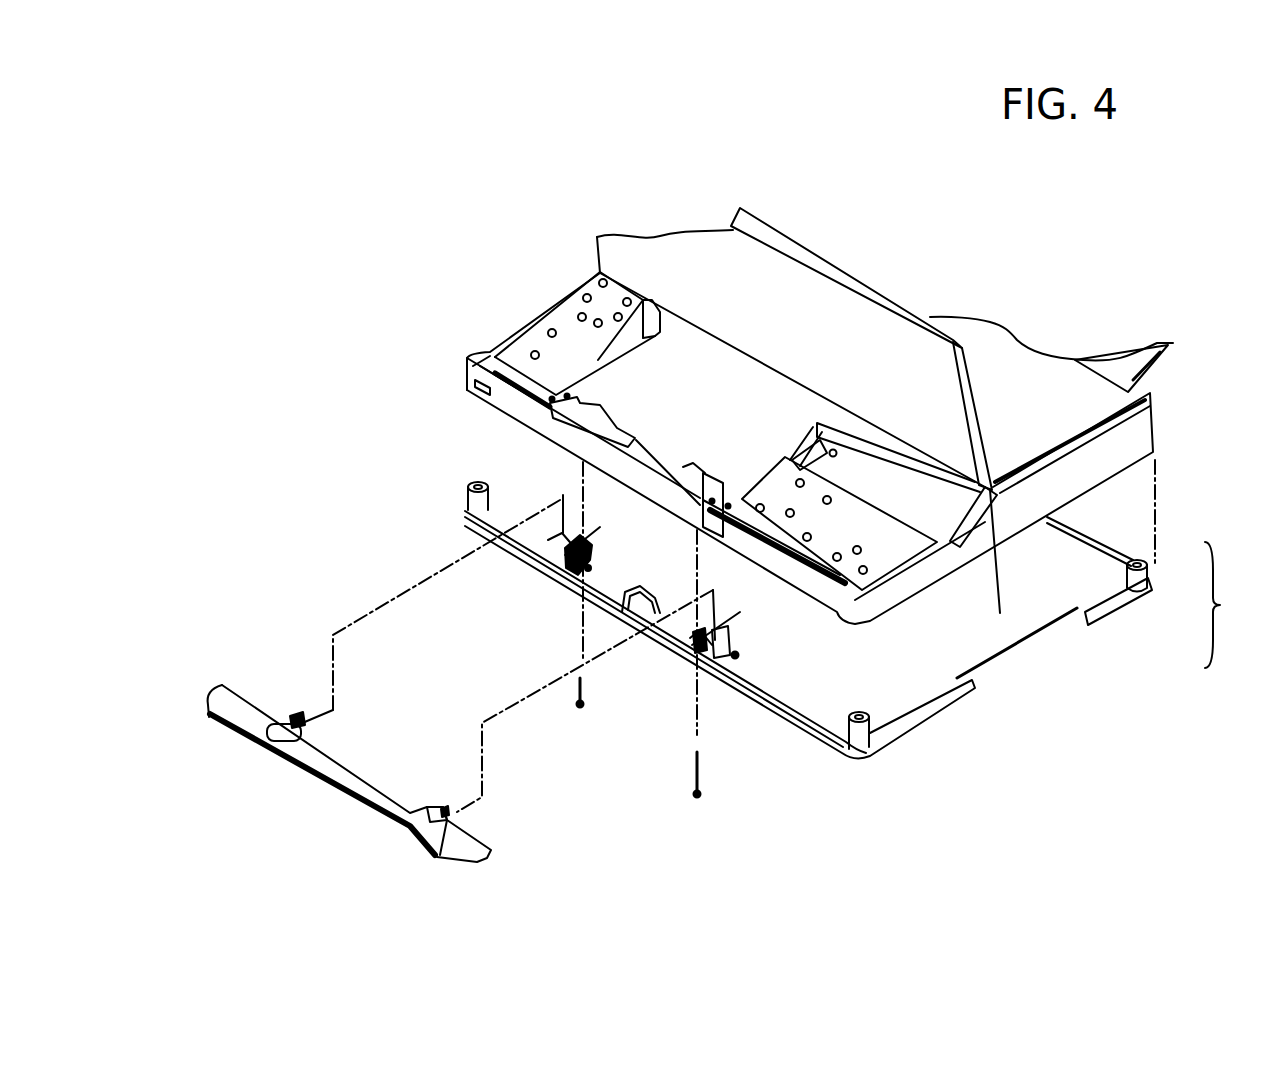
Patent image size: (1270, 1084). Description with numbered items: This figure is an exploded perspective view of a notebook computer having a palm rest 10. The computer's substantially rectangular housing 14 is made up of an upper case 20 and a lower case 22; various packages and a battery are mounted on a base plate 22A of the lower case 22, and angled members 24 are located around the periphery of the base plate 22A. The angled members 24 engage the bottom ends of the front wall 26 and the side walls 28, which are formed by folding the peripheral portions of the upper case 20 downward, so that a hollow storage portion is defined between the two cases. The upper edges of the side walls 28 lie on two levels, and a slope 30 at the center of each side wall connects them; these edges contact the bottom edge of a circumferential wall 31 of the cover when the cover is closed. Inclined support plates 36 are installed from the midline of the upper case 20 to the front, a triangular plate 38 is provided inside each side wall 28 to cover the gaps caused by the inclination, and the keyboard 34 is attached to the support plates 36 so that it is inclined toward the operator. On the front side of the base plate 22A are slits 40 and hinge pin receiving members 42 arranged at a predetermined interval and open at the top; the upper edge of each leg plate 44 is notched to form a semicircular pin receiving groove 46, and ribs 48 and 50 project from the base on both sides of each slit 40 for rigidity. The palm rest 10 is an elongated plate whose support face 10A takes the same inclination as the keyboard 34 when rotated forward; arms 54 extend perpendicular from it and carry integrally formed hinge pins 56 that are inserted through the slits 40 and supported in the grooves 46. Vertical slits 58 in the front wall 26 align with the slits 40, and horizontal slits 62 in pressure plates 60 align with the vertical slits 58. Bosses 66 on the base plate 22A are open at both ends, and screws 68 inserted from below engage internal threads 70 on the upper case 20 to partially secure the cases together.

The palm rest 10 is at (360, 813).
The support face 10A is at (427, 840).
The housing 14 is at (1229, 605).
The upper case 20 is at (1133, 470).
The lower case 22 is at (1120, 610).
The base plate 22A is at (947, 533).
The angled members 24 is at (482, 489).
The front wall 26 is at (503, 407).
The side walls 28 is at (1000, 613).
The slope 30 is at (1003, 560).
The circumferential wall 31 is at (1147, 363).
The keyboard 34 is at (912, 317).
The inclined support plates 36 is at (603, 300).
The triangular plate 38 is at (998, 613).
The slits 40 is at (567, 560).
The hinge pin receiving members 42 is at (590, 536).
The leg plate 44 is at (583, 573).
The pin receiving groove 46 is at (577, 558).
The rib 48 is at (573, 553).
The rib 50 is at (555, 543).
The arms 54 is at (280, 747).
The hinge pins 56 is at (292, 717).
The vertical slits 58 is at (557, 450).
The pressure plates 60 is at (567, 395).
The horizontal slits 62 is at (552, 398).
The bosses 66 is at (583, 568).
The screws 68 is at (577, 712).
The internal threads 70 is at (585, 422).